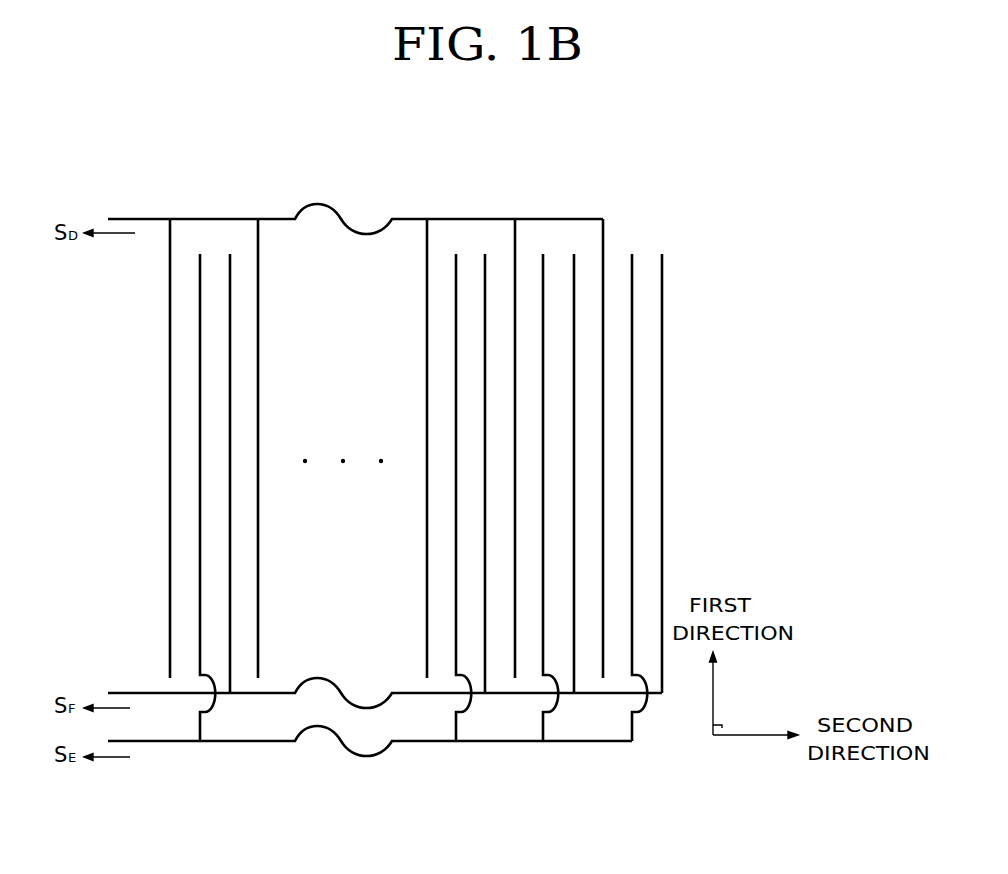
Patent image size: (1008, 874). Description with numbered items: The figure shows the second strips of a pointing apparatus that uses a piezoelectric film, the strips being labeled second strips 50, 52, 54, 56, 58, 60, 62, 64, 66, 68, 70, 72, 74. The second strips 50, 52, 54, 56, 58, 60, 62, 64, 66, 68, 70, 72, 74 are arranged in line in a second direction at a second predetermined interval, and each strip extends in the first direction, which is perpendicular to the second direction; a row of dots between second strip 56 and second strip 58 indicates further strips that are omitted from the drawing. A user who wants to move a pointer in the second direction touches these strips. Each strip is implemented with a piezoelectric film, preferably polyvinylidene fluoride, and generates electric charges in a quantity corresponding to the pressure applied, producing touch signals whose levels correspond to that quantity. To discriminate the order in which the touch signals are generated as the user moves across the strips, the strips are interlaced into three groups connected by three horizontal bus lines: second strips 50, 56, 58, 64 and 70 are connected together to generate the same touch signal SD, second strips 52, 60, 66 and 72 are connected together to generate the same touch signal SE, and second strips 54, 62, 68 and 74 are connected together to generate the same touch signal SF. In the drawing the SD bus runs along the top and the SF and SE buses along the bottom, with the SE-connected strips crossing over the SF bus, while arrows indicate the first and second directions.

The second strip 50 is at (172, 240).
The second strip 52 is at (201, 258).
The second strip 54 is at (231, 258).
The second strip 56 is at (259, 240).
The second strip 58 is at (428, 240).
The second strip 60 is at (457, 258).
The second strip 62 is at (486, 258).
The second strip 64 is at (516, 240).
The second strip 66 is at (544, 258).
The second strip 68 is at (575, 258).
The second strip 70 is at (604, 240).
The second strip 72 is at (633, 258).
The second strip 74 is at (663, 258).